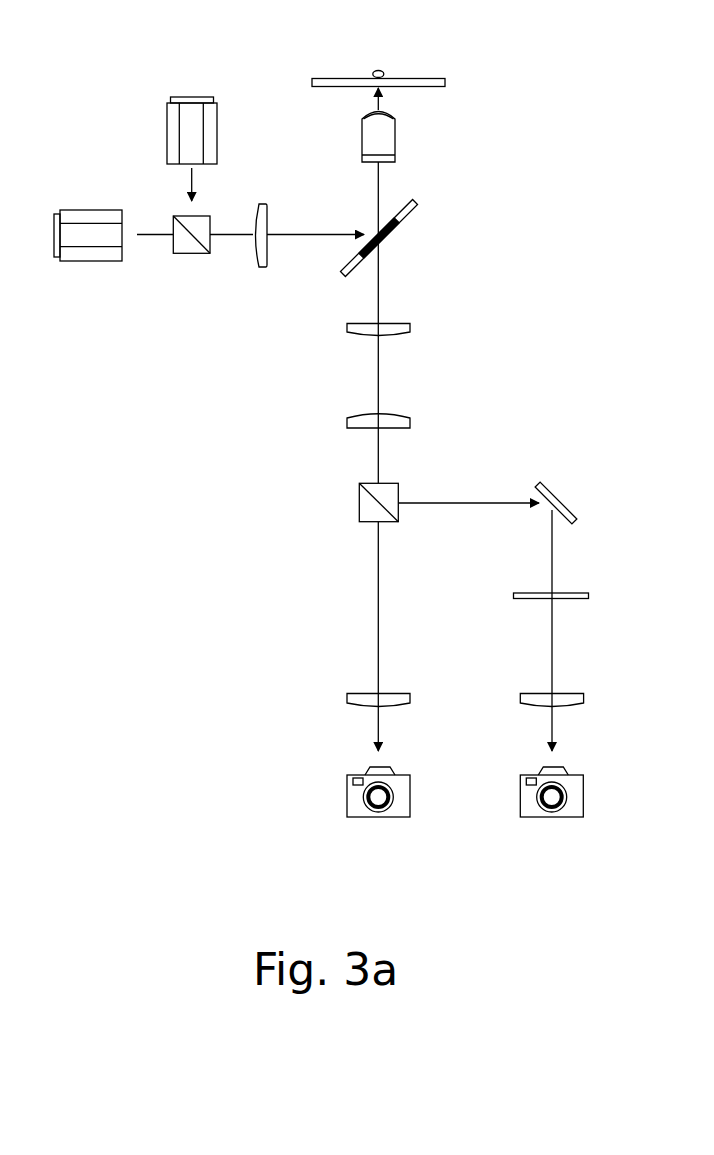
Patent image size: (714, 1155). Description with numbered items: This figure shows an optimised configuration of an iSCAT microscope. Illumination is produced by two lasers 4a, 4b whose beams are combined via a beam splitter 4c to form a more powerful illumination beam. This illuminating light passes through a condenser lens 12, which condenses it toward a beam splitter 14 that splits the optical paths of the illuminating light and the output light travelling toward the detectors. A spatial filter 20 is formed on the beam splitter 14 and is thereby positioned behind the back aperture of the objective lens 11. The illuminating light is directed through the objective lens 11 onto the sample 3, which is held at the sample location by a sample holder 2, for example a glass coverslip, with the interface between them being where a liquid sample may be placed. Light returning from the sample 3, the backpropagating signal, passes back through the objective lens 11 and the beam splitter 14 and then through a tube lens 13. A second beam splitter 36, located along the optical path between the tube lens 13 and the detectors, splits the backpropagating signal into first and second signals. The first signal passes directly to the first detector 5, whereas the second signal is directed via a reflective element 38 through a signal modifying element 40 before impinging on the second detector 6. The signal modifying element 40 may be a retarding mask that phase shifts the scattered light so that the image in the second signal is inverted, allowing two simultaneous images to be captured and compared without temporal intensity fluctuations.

The sample holder 2 is at (312, 81).
The sample 3 is at (373, 71).
The laser 4a is at (167, 117).
The laser 4b is at (92, 209).
The beam splitter 4c is at (175, 253).
The objective lens 11 is at (396, 140).
The condenser lens 12 is at (252, 250).
The tube lens 13 is at (408, 330).
The beam splitter 14 is at (407, 217).
The spatial filter 20 is at (372, 233).
The second beam splitter 36 is at (385, 522).
The reflective element 38 is at (563, 498).
The signal modifying element 40 is at (533, 599).
The detector 5 is at (358, 818).
The second detector 6 is at (530, 818).